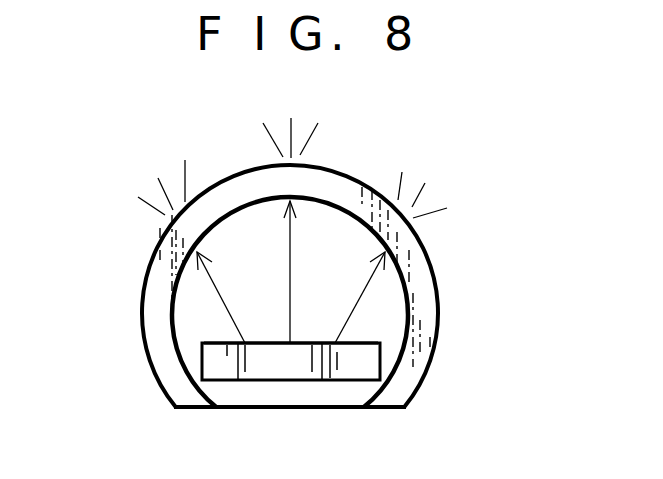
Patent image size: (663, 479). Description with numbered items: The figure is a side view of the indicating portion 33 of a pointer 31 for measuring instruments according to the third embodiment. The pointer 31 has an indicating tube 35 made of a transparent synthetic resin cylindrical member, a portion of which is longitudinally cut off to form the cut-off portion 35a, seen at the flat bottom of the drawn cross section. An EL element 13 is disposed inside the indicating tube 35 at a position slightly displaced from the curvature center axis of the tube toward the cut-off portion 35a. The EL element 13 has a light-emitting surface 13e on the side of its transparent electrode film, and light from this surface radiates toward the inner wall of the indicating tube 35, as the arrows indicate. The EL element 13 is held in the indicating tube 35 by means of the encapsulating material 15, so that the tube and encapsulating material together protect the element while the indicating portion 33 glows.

The pointer 31 is at (316, 283).
The indicating portion 33 is at (433, 278).
The indicating tube 35 is at (418, 371).
The cut-off portion 35a is at (356, 409).
The EL element 13 is at (212, 362).
The light-emitting surface 13e is at (218, 343).
The encapsulating material 15 is at (333, 227).